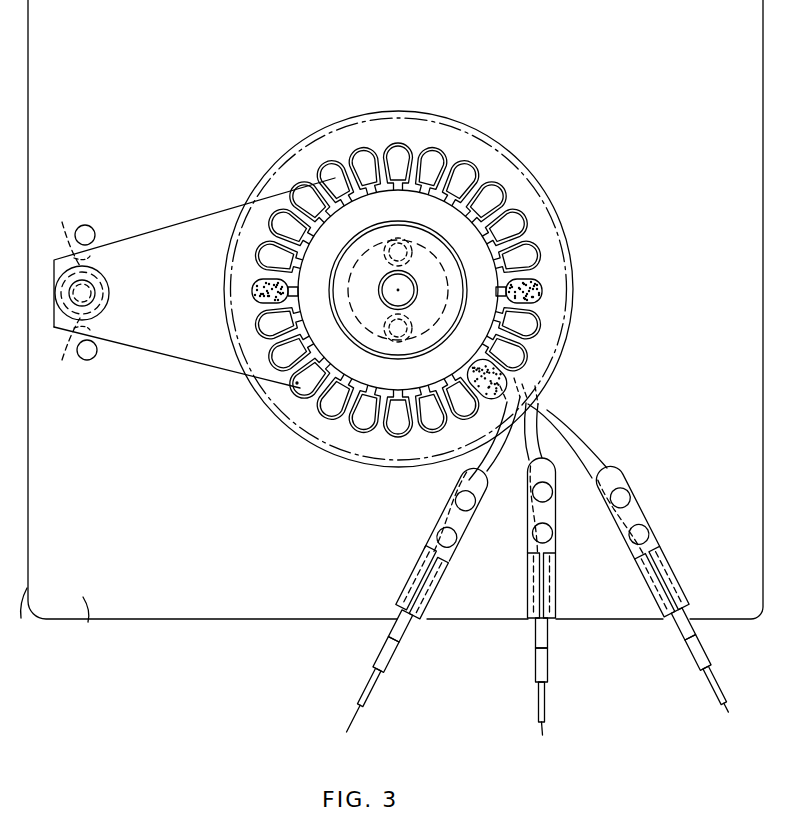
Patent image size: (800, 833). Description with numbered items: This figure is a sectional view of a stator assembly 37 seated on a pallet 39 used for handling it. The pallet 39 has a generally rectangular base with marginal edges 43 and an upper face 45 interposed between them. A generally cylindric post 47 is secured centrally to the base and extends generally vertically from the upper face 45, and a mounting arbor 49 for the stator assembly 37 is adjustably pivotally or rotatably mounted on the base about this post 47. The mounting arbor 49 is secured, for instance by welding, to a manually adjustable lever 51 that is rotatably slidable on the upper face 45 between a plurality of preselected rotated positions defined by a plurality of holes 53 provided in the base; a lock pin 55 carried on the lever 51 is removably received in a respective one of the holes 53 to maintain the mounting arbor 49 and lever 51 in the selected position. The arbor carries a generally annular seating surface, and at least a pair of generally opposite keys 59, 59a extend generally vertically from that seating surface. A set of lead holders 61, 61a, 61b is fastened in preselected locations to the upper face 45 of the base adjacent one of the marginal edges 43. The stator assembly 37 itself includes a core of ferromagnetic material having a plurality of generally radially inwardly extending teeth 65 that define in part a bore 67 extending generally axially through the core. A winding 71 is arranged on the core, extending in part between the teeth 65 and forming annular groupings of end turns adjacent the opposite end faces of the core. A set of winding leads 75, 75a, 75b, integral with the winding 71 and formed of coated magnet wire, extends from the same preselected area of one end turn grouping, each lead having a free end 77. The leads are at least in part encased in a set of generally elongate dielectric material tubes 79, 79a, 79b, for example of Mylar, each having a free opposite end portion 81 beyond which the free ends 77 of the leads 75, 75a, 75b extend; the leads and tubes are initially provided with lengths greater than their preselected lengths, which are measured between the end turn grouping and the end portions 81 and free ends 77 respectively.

The stator assembly 37 is at (506, 142).
The pallet 39 is at (153, 625).
The marginal edges 43 is at (32, 620).
The upper face 45 is at (81, 625).
The post 47 is at (378, 301).
The mounting arbor 49 is at (412, 217).
The manually adjustable lever 51 is at (178, 223).
The holes 53 is at (77, 235).
The lock pin 55 is at (109, 297).
The key 59 is at (297, 294).
The key 59a is at (503, 296).
The lead holder 61 is at (415, 568).
The lead holder 61a is at (527, 577).
The lead holder 61b is at (674, 577).
The teeth 65 is at (478, 205).
The bore 67 is at (300, 256).
The winding 71 is at (364, 158).
The winding lead 75 is at (366, 688).
The winding lead 75a is at (540, 697).
The winding lead 75b is at (715, 686).
The free end 77 is at (532, 729).
The dielectric material tube 79 is at (388, 639).
The dielectric material tube 79a is at (537, 637).
The dielectric material tube 79b is at (680, 635).
The free opposite end portion 81 is at (396, 658).